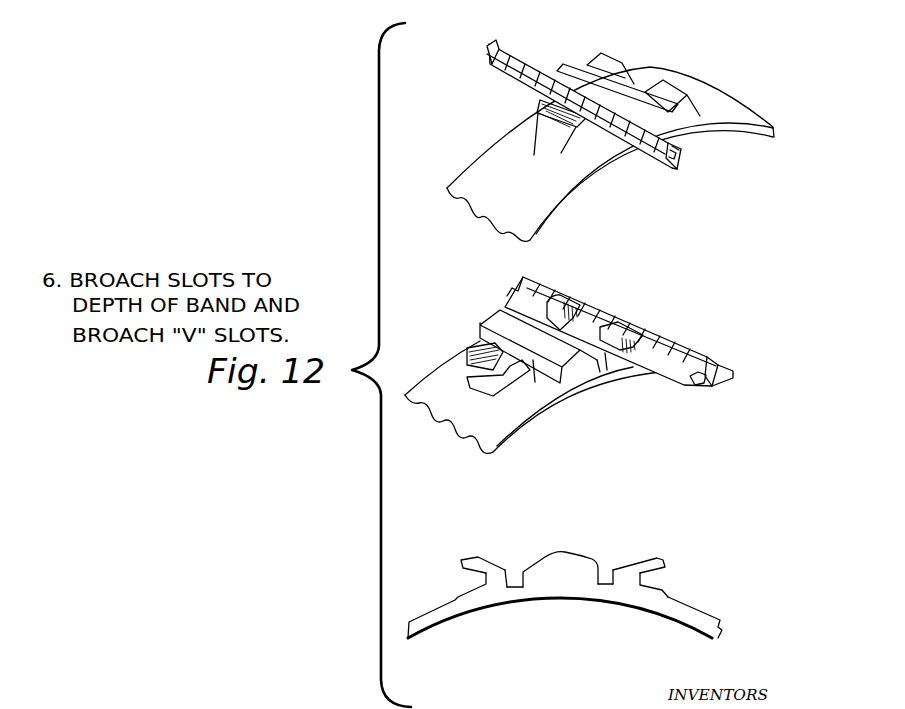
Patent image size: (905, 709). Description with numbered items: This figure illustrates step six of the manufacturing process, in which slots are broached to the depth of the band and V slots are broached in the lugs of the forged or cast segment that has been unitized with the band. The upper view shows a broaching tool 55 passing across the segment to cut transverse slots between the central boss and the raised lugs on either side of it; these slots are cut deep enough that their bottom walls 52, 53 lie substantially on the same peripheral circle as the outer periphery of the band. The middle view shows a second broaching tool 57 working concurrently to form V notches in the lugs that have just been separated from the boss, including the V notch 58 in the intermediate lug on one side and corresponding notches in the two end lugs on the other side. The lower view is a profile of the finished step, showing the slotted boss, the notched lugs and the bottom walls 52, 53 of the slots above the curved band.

The bottom wall of slot 52 is at (605, 588).
The bottom wall of slot 53 is at (515, 587).
The broaching tool 55 is at (680, 156).
The broaching tool 57 is at (687, 363).
The V notch 58 is at (465, 575).